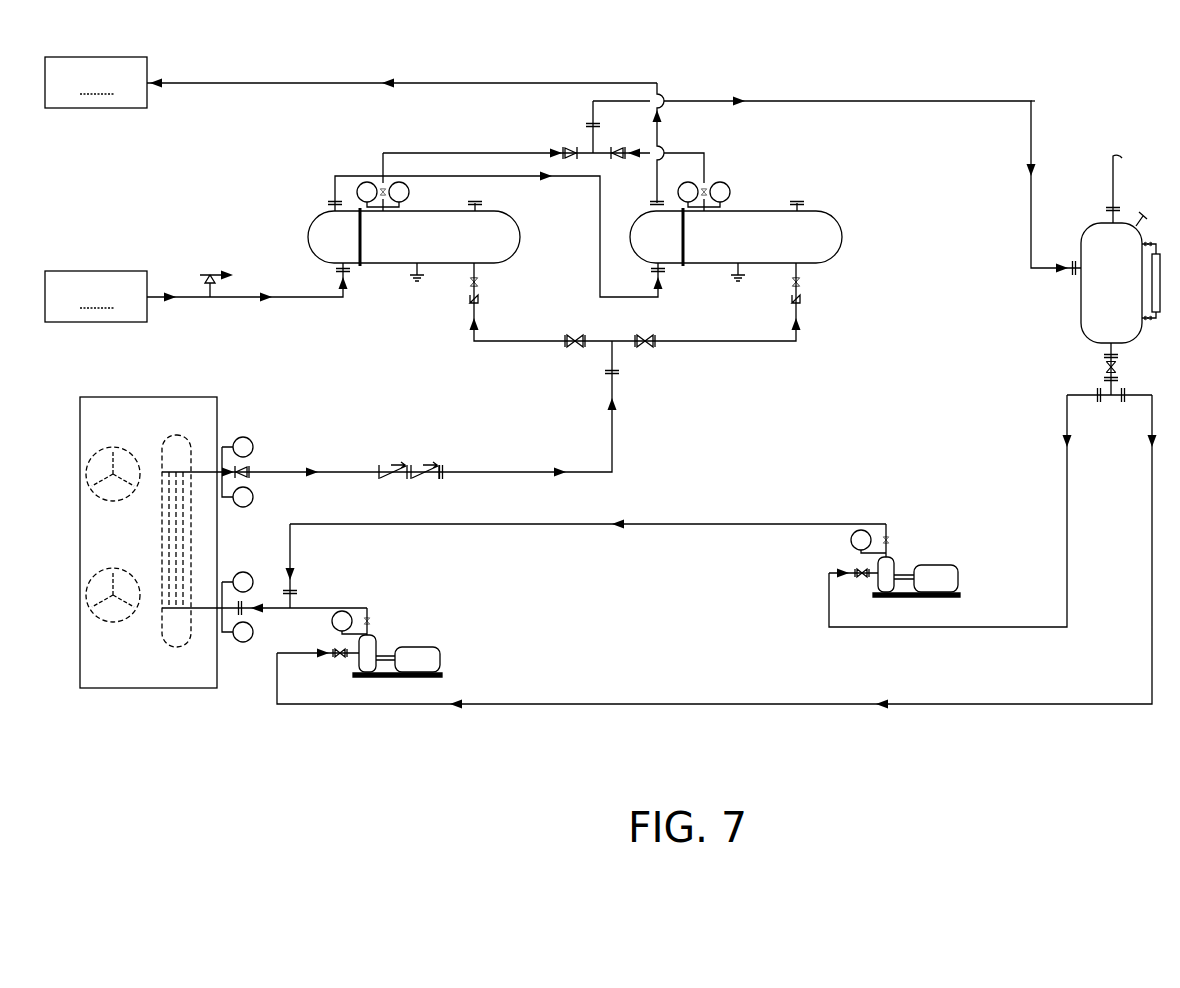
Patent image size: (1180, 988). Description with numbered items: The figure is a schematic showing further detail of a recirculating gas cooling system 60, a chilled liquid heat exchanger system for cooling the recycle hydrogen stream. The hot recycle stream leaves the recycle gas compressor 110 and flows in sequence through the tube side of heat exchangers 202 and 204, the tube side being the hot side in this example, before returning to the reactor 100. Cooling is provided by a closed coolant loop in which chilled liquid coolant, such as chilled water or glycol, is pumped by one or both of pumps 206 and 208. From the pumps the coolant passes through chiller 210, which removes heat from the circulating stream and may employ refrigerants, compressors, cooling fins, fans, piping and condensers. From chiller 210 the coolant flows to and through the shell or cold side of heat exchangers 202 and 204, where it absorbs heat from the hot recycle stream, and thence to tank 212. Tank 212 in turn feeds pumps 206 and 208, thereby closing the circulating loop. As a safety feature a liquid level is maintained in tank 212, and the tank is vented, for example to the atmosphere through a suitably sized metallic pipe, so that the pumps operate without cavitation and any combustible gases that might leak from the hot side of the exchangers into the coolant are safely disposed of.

The recirculating gas cooling system 60 is at (929, 84).
The reactor 100 is at (96, 82).
The recycle gas compressor 110 is at (96, 296).
The heat exchanger 202 is at (521, 242).
The heat exchanger 204 is at (843, 237).
The pump 206 is at (441, 657).
The pump 208 is at (948, 562).
The chiller 210 is at (180, 690).
The tank 212 is at (1081, 316).